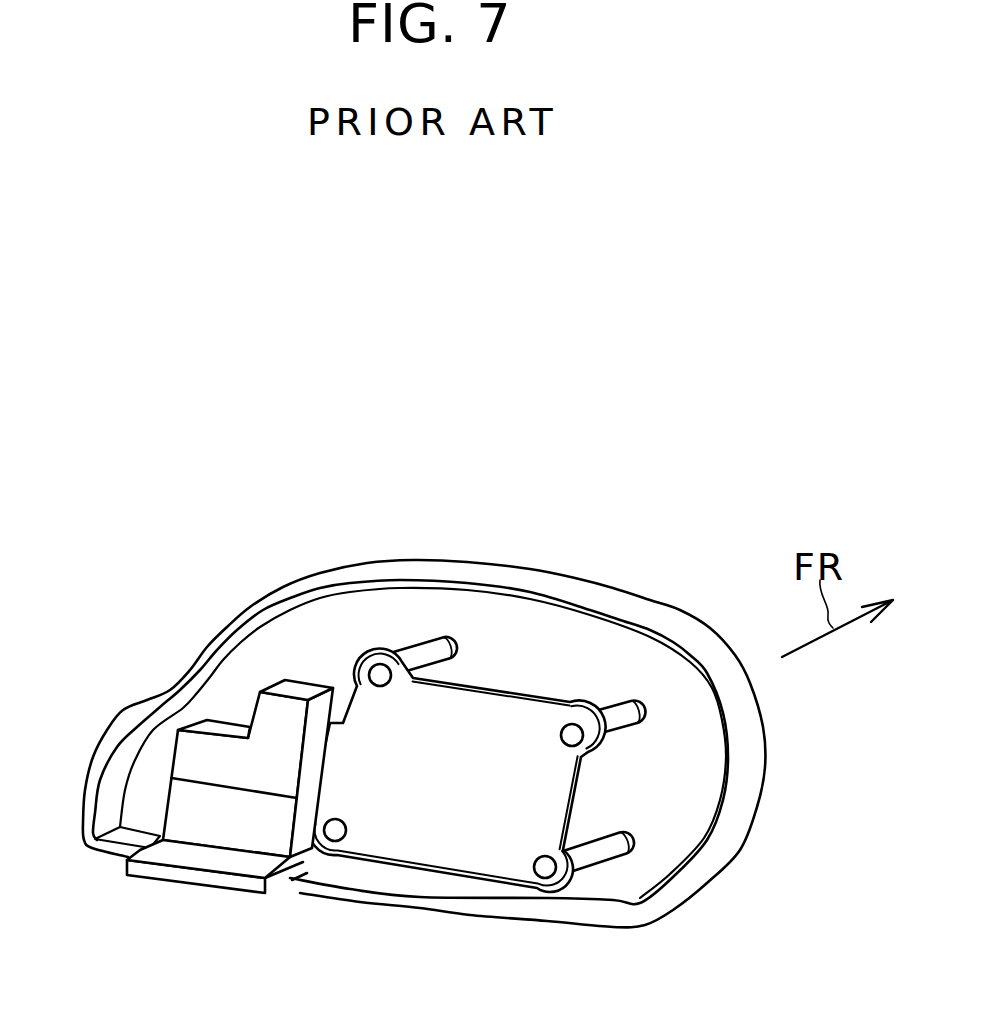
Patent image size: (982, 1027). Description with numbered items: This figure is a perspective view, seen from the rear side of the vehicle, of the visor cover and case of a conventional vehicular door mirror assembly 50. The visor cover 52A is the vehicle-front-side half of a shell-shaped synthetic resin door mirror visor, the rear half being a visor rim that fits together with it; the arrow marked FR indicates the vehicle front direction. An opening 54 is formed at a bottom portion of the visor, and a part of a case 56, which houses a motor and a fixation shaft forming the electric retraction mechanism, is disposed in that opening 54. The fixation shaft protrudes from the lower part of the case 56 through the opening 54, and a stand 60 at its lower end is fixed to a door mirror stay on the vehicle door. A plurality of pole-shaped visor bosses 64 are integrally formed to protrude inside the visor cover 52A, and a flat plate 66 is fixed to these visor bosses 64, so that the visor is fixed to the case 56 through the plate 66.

The vehicular door mirror assembly 50 is at (182, 435).
The visor cover 52A is at (537, 583).
The opening 54 is at (290, 877).
The case 56 is at (290, 707).
The stand 60 is at (170, 873).
The visor bosses 64 is at (447, 647).
The plate 66 is at (542, 713).